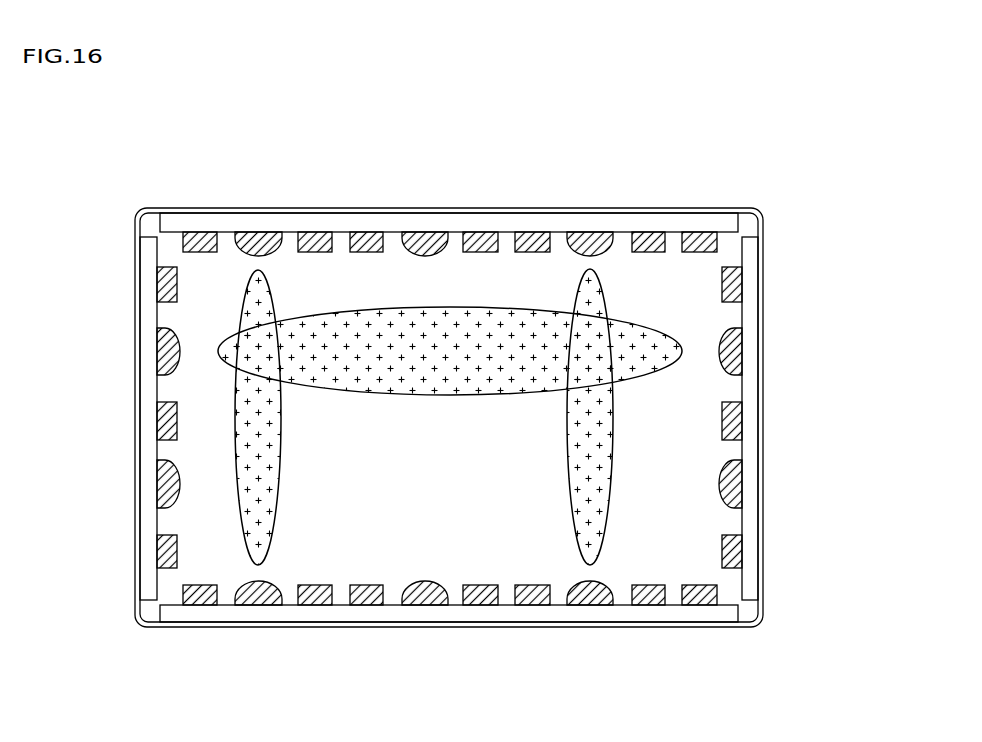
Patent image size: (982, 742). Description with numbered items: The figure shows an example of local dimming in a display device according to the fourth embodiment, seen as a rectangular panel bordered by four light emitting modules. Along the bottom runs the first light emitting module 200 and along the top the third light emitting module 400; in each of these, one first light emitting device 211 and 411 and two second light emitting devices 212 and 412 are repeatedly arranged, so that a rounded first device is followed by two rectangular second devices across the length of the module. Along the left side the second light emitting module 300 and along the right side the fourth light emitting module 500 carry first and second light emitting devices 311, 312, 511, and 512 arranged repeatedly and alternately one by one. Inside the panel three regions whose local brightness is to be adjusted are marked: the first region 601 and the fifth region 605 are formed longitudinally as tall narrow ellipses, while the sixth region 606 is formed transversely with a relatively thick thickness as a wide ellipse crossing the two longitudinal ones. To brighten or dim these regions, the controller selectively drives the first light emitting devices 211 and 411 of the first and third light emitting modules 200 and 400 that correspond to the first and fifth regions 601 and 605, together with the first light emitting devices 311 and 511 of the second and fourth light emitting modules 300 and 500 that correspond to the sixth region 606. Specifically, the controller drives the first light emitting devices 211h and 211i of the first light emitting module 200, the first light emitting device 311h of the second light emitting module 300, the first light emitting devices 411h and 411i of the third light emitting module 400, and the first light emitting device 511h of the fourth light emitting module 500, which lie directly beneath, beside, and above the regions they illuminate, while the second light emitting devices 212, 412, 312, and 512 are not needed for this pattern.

The first light emitting module 200 is at (456, 640).
The first light emitting device 211 is at (416, 615).
The first light emitting device 211h is at (257, 605).
The first light emitting device 211i is at (600, 605).
The second light emitting devices 212 is at (367, 615).
The second light emitting module 300 is at (123, 390).
The first light emitting device 311 is at (146, 480).
The first light emitting device 311h is at (165, 350).
The second light emitting device 312 is at (146, 418).
The third light emitting module 400 is at (455, 187).
The first light emitting device 411 is at (419, 222).
The first light emitting device 411h is at (255, 237).
The first light emitting device 411i is at (592, 237).
The second light emitting devices 412 is at (367, 222).
The fourth light emitting module 500 is at (779, 390).
The first light emitting device 511 is at (753, 478).
The first light emitting device 511h is at (735, 345).
The second light emitting device 512 is at (753, 425).
The first region 601 is at (247, 528).
The fifth region 605 is at (592, 285).
The sixth region 606 is at (505, 312).